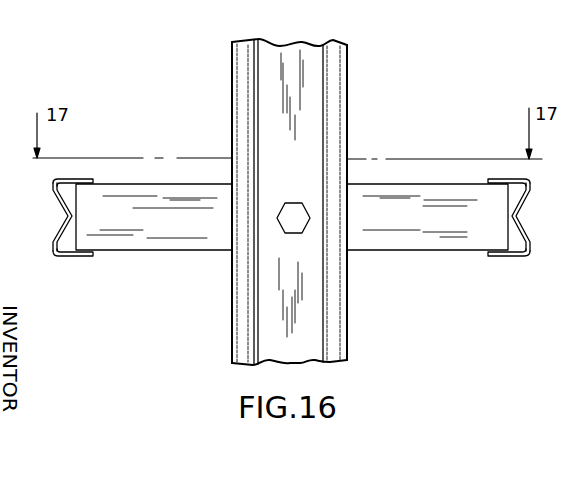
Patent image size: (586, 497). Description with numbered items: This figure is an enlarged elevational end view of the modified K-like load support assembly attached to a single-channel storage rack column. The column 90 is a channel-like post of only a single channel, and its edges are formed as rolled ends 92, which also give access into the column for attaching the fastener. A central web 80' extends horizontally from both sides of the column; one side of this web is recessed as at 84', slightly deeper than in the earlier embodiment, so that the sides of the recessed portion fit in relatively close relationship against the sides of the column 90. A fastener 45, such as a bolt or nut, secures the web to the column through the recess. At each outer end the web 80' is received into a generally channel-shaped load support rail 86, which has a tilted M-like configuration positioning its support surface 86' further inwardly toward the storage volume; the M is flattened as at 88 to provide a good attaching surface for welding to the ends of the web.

The fastener 45 is at (299, 202).
The central web 80' is at (292, 241).
The recessed portion 84' is at (371, 203).
The load support rail 86 is at (316, 234).
The support surface 86' is at (91, 155).
The flattened portion 88 is at (66, 216).
The column 90 is at (298, 202).
The rolled end 92 is at (242, 94).